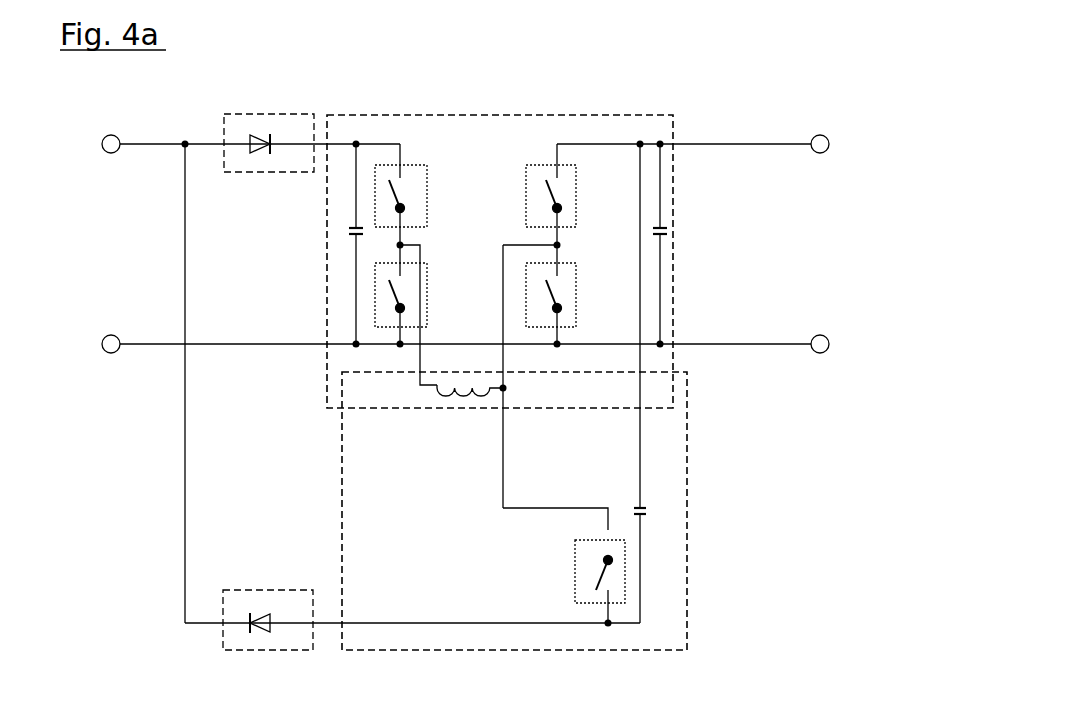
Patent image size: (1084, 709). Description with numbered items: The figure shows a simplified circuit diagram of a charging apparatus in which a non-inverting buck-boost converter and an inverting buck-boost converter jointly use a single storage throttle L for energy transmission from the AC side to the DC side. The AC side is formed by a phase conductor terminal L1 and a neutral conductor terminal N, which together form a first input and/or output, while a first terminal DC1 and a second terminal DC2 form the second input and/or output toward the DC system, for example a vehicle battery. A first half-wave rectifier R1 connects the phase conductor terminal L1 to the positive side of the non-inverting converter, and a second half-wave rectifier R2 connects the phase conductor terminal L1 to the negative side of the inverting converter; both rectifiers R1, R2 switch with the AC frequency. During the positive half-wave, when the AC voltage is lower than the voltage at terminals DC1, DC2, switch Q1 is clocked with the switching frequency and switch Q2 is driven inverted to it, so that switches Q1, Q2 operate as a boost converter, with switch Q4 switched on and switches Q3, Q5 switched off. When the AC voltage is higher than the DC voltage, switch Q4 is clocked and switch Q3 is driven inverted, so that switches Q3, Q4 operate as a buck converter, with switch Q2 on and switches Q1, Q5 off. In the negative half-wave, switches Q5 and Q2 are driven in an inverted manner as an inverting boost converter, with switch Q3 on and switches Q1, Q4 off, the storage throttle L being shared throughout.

The phase conductor terminal L1 is at (82, 147).
The neutral conductor terminal N is at (81, 347).
The first terminal for the DC system DC1 is at (881, 147).
The second terminal for the DC system DC2 is at (881, 347).
The first half-wave rectifier R1 is at (269, 120).
The second half-wave rectifier R2 is at (268, 605).
The switch Q1 is at (574, 295).
The switch Q2 is at (574, 196).
The switch Q3 is at (417, 295).
The switch Q4 is at (417, 196).
The switch Q5 is at (585, 571).
The storage throttle L is at (470, 423).